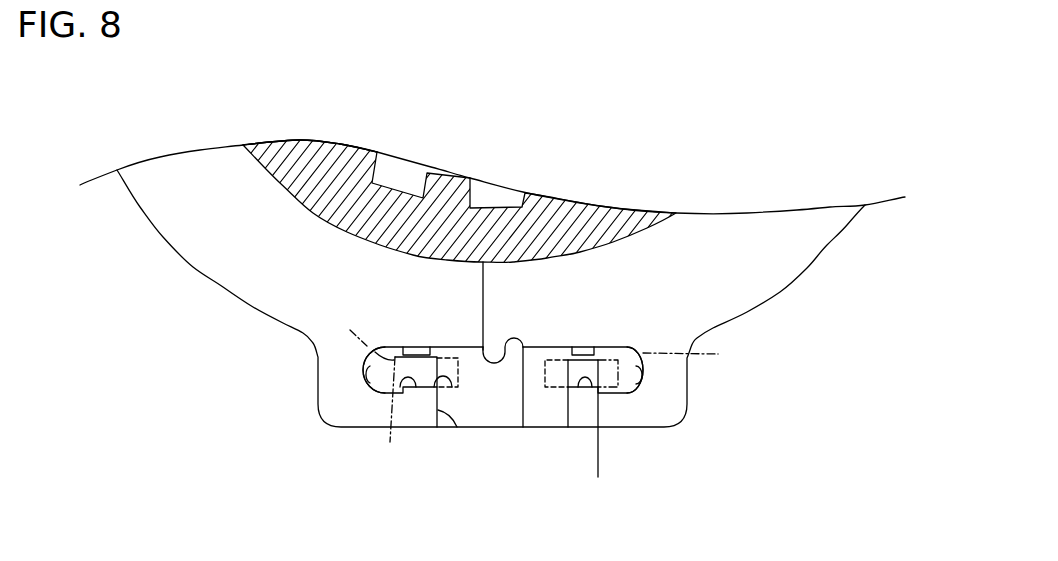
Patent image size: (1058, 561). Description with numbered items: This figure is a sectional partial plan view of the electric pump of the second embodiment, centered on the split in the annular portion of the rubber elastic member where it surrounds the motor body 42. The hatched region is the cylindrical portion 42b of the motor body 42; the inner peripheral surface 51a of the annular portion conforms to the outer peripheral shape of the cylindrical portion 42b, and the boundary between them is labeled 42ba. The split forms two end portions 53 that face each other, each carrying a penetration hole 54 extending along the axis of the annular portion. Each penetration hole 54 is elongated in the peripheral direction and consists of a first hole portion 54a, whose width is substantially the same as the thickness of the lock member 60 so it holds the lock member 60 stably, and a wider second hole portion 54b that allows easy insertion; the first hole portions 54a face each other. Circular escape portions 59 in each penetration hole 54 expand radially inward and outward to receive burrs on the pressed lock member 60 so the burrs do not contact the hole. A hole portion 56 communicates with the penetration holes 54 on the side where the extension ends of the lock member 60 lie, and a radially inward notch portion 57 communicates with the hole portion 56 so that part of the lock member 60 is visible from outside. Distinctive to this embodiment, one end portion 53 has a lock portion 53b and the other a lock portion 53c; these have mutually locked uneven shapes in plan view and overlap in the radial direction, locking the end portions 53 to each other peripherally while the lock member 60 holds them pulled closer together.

The inner peripheral surface 51a is at (277, 143).
The motor body 42 is at (464, 205).
The cylindrical portion 42b is at (318, 210).
The surface of protruding portion 42ba is at (270, 178).
The end portions 53 is at (362, 412).
The lock portion 53b is at (508, 356).
The lock portion 53c is at (493, 345).
The penetration holes 54 is at (490, 436).
The first hole portion 54a is at (493, 430).
The second hole portion 54b is at (395, 367).
The hole portion 56 is at (476, 366).
The notch portion 57 is at (457, 430).
The escape portions 59 is at (447, 378).
The lock member 60 is at (540, 334).